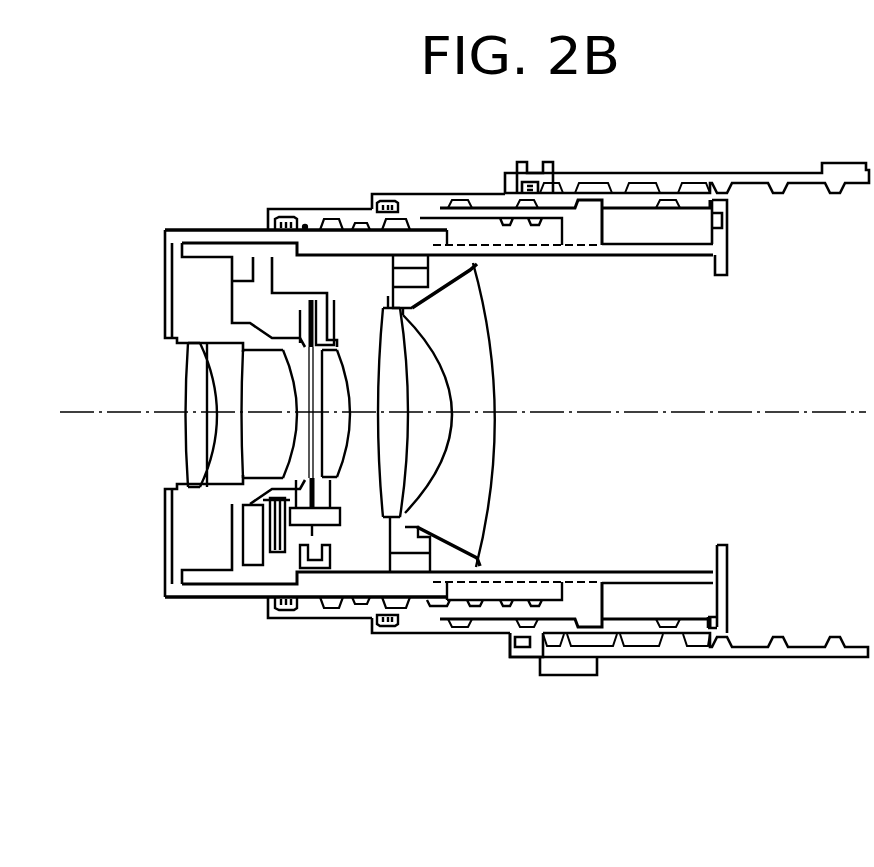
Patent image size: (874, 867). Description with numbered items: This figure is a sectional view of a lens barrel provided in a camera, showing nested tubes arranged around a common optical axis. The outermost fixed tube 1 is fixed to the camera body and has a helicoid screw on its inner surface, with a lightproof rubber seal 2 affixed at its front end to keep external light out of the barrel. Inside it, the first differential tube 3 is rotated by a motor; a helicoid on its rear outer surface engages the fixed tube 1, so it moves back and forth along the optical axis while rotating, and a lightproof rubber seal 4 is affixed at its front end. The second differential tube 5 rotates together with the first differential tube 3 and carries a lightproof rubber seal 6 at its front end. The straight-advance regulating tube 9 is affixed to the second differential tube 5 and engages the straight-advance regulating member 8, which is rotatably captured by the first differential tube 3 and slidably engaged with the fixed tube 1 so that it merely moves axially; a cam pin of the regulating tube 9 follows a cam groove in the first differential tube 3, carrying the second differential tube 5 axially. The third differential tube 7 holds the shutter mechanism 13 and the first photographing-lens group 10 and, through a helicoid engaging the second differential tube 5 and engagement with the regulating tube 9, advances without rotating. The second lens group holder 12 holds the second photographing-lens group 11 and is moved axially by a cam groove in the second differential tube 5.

The fixed tube 1 is at (654, 180).
The lightproof rubber seal 2 is at (531, 182).
The first differential tube 3 is at (420, 200).
The lightproof rubber seal 4 is at (388, 200).
The second differential tube 5 is at (315, 215).
The lightproof rubber seal 6 is at (287, 217).
The third differential tube 7 is at (177, 245).
The straight-advance regulating member 8 is at (727, 259).
The straight-advance regulating tube 9 is at (588, 222).
The first photographing-lens group 10 is at (335, 448).
The second photographing-lens group 11 is at (428, 518).
The second lens group holder 12 is at (444, 525).
The shutter mechanism 13 is at (273, 543).